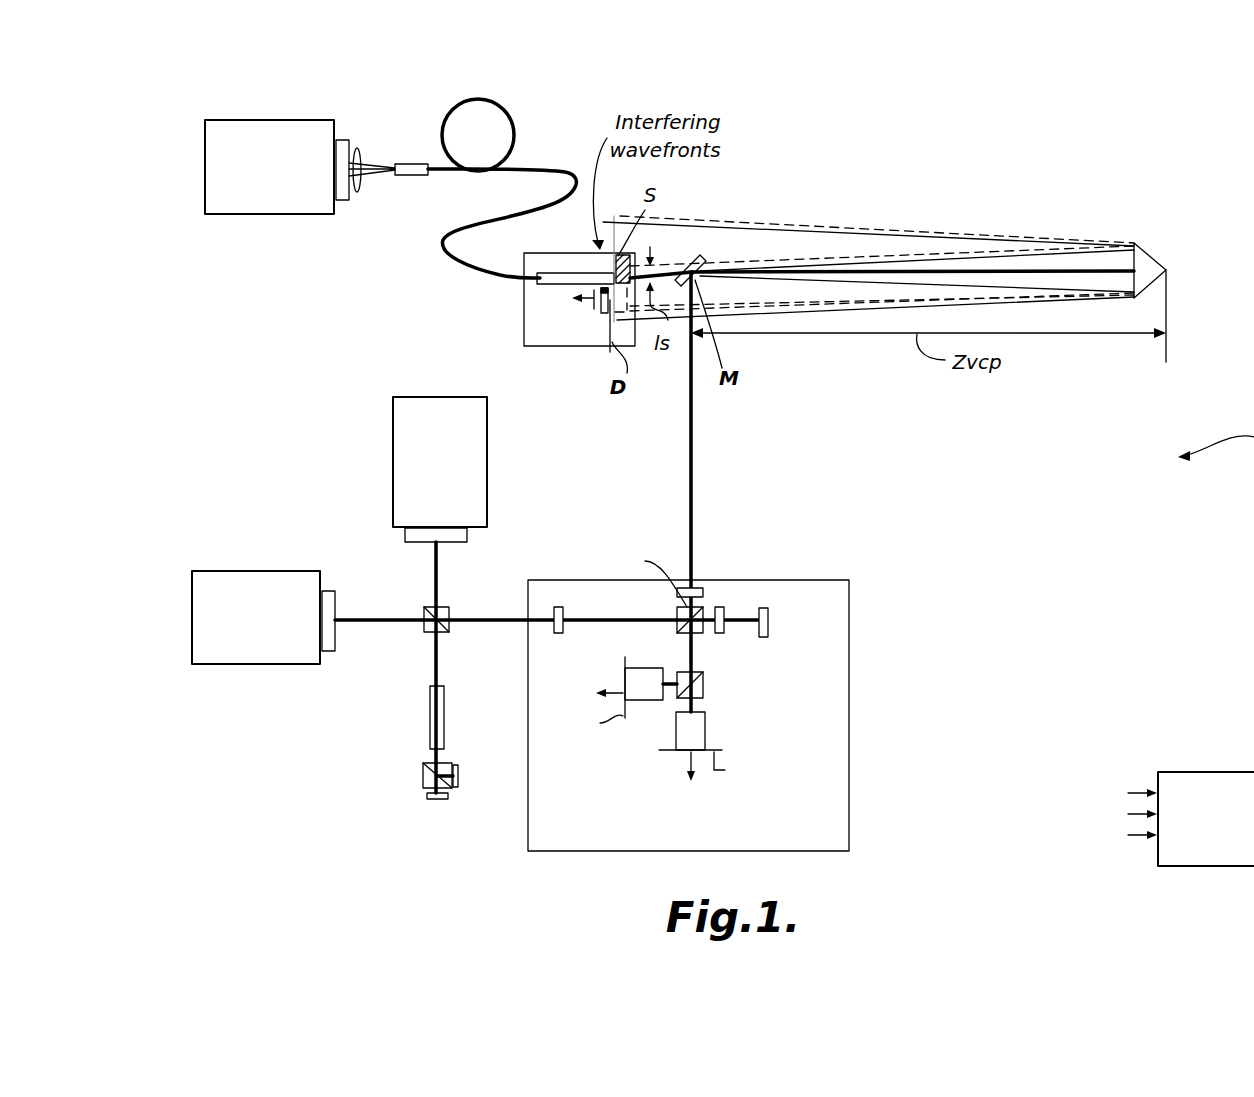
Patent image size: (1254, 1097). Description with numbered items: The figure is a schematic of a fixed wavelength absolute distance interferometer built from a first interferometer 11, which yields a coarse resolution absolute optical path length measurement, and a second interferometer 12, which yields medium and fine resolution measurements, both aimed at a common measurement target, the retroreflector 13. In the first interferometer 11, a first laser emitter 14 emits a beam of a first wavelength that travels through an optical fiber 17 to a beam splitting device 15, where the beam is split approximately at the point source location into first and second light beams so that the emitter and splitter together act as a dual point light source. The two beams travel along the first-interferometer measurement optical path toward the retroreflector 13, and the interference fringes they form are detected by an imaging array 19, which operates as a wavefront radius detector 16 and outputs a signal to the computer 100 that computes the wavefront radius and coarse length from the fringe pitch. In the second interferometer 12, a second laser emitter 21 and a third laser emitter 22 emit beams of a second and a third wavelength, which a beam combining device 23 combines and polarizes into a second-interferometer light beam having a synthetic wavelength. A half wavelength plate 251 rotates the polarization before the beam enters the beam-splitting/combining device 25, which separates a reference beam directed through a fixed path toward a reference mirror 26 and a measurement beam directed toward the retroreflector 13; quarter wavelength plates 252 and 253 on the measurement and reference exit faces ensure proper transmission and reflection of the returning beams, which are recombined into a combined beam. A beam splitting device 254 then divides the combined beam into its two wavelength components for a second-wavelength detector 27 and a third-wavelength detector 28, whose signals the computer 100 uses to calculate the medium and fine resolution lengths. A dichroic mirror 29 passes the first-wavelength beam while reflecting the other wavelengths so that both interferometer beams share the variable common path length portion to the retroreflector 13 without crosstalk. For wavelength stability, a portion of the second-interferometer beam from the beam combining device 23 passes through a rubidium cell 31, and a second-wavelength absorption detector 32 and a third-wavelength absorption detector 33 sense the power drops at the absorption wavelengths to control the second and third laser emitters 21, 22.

The first interferometer 11 is at (524, 343).
The second interferometer 12 is at (688, 715).
The retroreflector 13 is at (1153, 253).
The first laser emitter 14 is at (205, 142).
The beam splitting device 15 is at (634, 258).
The wavefront radius detector 16 is at (593, 308).
The optical fiber 17 is at (447, 250).
The imaging array 19 is at (606, 313).
The second laser emitter 21 is at (393, 425).
The third laser emitter 22 is at (192, 588).
The beam combining device 23 is at (449, 616).
The beam-splitting/combining device 25 is at (700, 634).
The reference mirror 26 is at (771, 624).
The λ2 detector 27 is at (624, 658).
The λ3 detector 28 is at (706, 725).
The dichroic mirror 29 is at (698, 258).
The rubidium cell 31 is at (429, 714).
The λ2 absorption detector 32 is at (436, 801).
The λ3 absorption detector 33 is at (458, 769).
The computer 100 is at (1176, 819).
The half wavelength plate 251 is at (560, 606).
The quarter wavelength plate 252 is at (683, 588).
The quarter wavelength plate 253 is at (721, 606).
The beam splitting device 254 is at (704, 683).